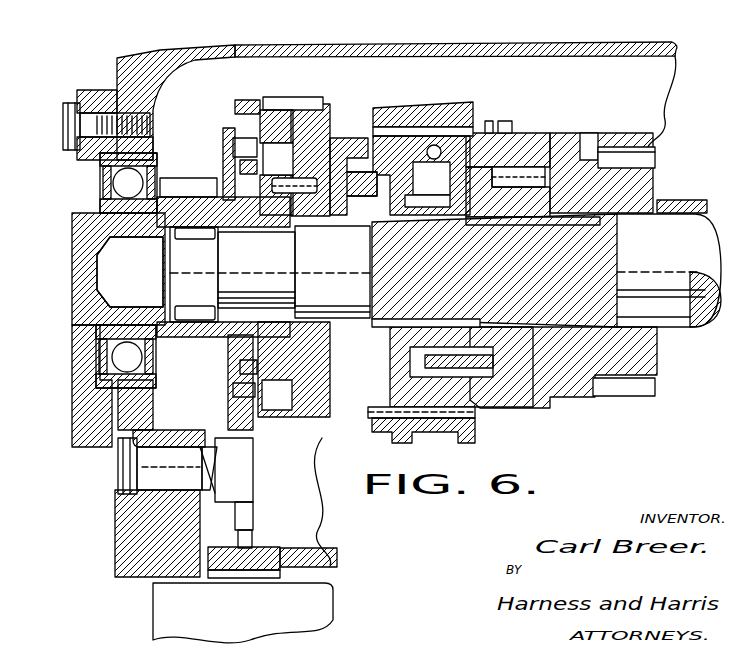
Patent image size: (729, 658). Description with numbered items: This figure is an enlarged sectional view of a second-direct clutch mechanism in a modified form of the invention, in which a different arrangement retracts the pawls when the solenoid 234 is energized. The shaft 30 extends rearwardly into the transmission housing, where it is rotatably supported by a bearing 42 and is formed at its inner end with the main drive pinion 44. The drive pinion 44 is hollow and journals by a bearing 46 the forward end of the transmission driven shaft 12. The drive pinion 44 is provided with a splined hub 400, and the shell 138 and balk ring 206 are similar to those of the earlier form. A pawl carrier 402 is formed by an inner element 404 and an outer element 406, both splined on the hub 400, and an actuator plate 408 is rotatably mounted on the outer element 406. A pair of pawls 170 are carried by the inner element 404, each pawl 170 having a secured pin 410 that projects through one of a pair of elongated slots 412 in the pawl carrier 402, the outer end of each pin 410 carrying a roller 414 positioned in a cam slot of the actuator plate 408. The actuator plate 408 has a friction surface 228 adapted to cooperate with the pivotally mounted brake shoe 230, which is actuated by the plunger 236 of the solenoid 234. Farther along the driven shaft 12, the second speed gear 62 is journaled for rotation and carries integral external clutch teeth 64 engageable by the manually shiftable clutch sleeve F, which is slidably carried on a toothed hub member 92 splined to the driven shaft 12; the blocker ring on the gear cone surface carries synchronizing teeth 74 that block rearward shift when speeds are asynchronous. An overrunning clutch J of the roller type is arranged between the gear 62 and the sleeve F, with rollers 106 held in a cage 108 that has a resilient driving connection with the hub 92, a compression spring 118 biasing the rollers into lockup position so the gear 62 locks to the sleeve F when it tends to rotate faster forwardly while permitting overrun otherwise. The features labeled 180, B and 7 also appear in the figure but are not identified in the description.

The friction surface 228 is at (214, 84).
The actuator plate 408 is at (247, 100).
The elongated slots 412 is at (230, 116).
The inner element 404 is at (262, 116).
The roller 414 is at (232, 136).
The outer element 406 is at (236, 150).
The main drive pinion 44 is at (196, 178).
The bearing 42 is at (118, 178).
The shaft 30 is at (85, 215).
The bearing 46 is at (165, 248).
The splined hub 400 is at (234, 234).
The sleeve 180 is at (305, 97).
The shell 138 is at (300, 108).
The pawls 170 is at (293, 118).
The pin 410 is at (293, 143).
The toothed hub member 92 is at (362, 184).
The compression spring 118 is at (425, 203).
The clutch blocker synchronizing teeth 74 is at (489, 122).
The external clutch teeth 64 is at (505, 122).
The rollers 106 is at (532, 166).
The second speed gear 62 is at (640, 152).
The cage 108 is at (518, 223).
The transmission driven shaft 12 is at (546, 276).
The balk ring 206 is at (325, 420).
The brake shoe 230 is at (316, 505).
The plunger 236 is at (325, 535).
The solenoid 234 is at (260, 617).
The pawl carrier 402 is at (228, 425).
The clutch sleeve F is at (432, 105).
The overrunning clutch J is at (520, 228).
The section line B is at (265, 71).
The section line 7 is at (322, 81).